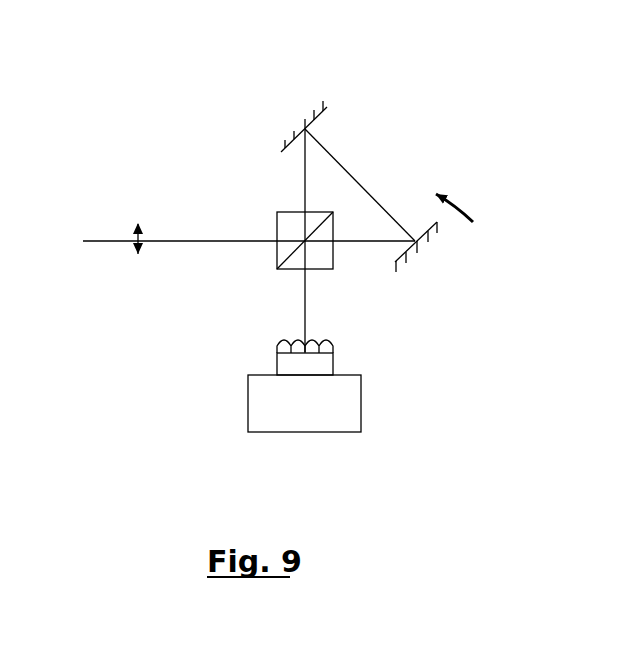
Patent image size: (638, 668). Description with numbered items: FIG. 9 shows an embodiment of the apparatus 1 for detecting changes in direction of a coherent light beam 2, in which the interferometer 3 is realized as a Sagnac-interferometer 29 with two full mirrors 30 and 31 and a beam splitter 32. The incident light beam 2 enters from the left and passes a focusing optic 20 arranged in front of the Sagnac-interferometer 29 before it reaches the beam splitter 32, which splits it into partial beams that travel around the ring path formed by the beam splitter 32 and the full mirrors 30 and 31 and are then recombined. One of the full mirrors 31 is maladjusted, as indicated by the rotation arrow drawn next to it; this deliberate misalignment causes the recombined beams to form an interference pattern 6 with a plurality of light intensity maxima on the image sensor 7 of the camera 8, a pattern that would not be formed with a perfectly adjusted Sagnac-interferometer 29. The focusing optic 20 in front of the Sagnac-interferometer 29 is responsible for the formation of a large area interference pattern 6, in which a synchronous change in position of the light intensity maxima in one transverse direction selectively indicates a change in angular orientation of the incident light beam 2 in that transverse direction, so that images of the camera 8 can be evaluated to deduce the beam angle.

The apparatus 1 is at (301, 227).
The light beam 2 is at (95, 238).
The interferometer 3 is at (376, 155).
The interference pattern 6 is at (333, 333).
The image sensor 7 is at (358, 326).
The camera 8 is at (364, 402).
The focusing optic 20 is at (136, 272).
The Sagnac-interferometer 29 is at (296, 191).
The full mirror 30 is at (307, 107).
The full mirror 31 is at (438, 249).
The beam splitter 32 is at (281, 208).